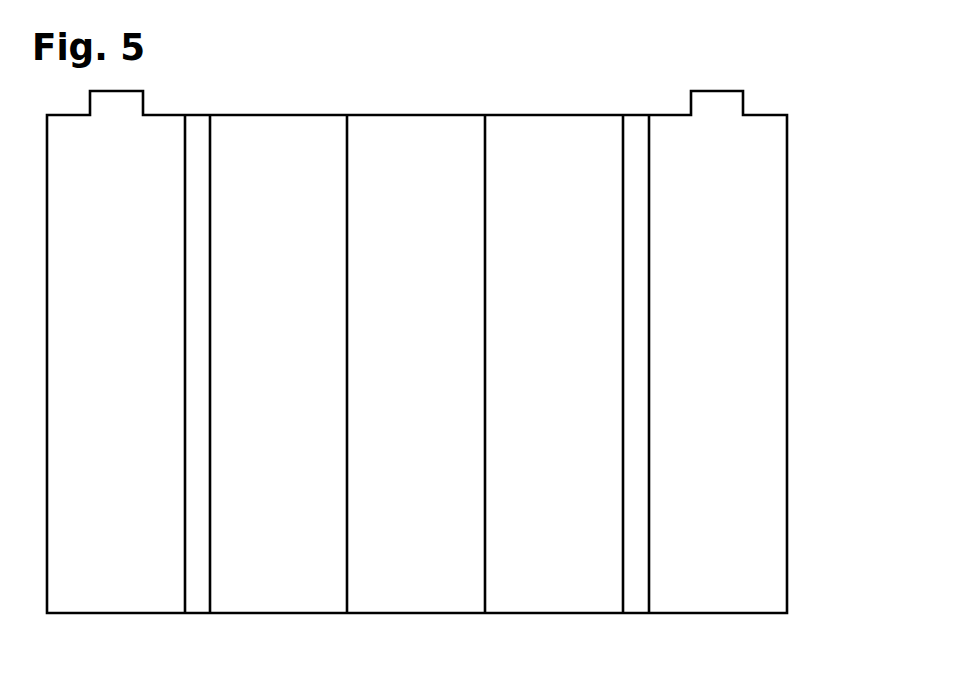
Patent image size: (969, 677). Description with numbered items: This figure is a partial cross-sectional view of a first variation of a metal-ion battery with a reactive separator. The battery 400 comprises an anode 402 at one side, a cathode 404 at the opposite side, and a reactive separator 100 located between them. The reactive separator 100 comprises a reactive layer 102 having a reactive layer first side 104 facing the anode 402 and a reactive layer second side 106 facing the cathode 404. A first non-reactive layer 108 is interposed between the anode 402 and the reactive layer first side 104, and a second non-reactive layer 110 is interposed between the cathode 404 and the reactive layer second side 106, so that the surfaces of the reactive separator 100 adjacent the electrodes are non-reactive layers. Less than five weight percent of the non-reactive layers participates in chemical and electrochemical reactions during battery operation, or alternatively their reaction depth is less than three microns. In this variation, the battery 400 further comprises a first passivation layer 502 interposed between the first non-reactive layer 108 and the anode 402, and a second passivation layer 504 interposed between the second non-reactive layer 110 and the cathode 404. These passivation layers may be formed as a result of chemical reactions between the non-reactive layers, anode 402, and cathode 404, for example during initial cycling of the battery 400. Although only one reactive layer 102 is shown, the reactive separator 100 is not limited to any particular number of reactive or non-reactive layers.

The reactive separator 100 is at (623, 107).
The reactive layer 102 is at (416, 364).
The reactive layer first side 104 is at (346, 155).
The reactive layer second side 106 is at (492, 155).
The first non-reactive layer 108 is at (278, 364).
The second non-reactive layer 110 is at (554, 364).
The battery 400 is at (813, 70).
The anode 402 is at (116, 364).
The cathode 404 is at (718, 364).
The first passivation layer 502 is at (196, 616).
The second passivation layer 504 is at (635, 616).